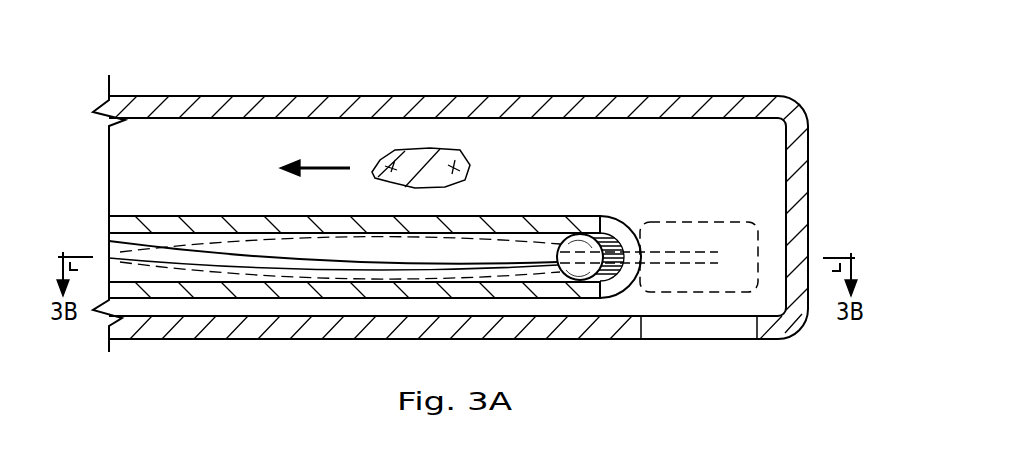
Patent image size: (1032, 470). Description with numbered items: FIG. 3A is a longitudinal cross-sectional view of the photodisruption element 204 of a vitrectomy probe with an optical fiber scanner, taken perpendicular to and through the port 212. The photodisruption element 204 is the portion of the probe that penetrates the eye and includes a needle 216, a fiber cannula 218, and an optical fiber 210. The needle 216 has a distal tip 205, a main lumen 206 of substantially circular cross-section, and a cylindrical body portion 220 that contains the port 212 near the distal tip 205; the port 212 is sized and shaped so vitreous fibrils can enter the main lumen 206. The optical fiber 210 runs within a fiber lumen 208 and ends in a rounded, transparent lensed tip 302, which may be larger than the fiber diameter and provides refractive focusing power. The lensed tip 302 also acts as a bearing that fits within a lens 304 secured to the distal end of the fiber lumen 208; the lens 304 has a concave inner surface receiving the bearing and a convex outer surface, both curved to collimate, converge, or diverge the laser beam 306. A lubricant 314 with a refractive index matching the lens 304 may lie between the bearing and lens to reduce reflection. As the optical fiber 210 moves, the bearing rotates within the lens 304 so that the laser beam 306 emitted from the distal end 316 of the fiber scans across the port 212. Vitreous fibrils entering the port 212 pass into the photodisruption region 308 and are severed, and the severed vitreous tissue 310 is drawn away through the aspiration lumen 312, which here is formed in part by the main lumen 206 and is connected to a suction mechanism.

The photodisruption element 204 is at (532, 70).
The distal tip 205 is at (803, 94).
The main lumen 206 is at (277, 96).
The fiber lumen 208 is at (157, 243).
The optical fiber 210 is at (345, 275).
The port 212 is at (686, 342).
The needle 216 is at (690, 98).
The fiber cannula 218 is at (213, 290).
The cylindrical body portion 220 is at (372, 106).
The lensed tip 302 is at (575, 282).
The lens 304 is at (618, 290).
The laser beam 306 is at (704, 250).
The photodisruption region 308 is at (712, 292).
The severed vitreous tissue 310 is at (468, 160).
The aspiration lumen 312 is at (224, 181).
The lubricant 314 is at (612, 236).
The distal end 316 is at (628, 246).